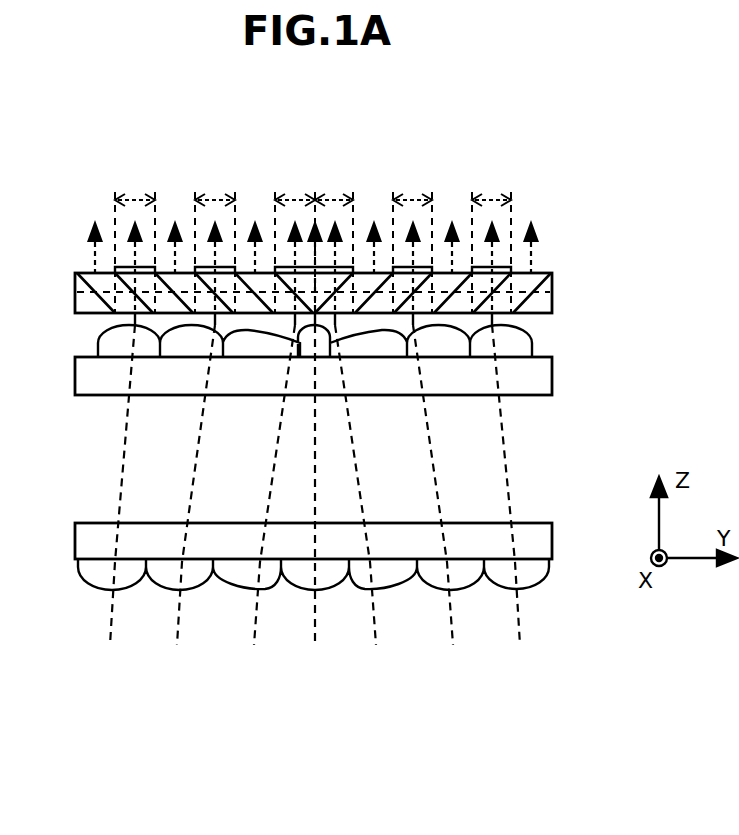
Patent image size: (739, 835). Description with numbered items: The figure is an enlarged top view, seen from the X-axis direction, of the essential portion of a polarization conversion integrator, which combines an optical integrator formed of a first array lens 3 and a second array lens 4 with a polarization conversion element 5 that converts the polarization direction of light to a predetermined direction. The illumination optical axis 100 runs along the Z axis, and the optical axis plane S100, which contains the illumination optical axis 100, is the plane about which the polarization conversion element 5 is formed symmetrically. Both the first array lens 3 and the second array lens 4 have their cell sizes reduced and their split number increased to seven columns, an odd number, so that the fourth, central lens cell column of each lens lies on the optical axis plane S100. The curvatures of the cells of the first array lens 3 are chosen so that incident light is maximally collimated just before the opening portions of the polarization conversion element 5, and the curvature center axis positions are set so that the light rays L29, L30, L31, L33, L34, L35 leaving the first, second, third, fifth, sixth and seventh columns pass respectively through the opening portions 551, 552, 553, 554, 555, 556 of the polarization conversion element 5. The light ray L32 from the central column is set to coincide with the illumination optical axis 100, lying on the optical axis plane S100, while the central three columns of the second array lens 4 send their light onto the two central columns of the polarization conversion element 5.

The illumination optical axis 100 is at (318, 622).
The optical axis plane S100 is at (425, 740).
The first array lens 3 is at (75, 537).
The second array lens 4 is at (88, 395).
The polarization conversion element 5 is at (542, 271).
The opening portion 551 is at (132, 192).
The opening portion 552 is at (213, 192).
The opening portion 553 is at (295, 192).
The opening portion 554 is at (337, 192).
The opening portion 555 is at (413, 192).
The opening portion 556 is at (490, 192).
The light ray L29 is at (108, 648).
The light ray L30 is at (177, 648).
The light ray L31 is at (254, 648).
The light ray L32 is at (313, 648).
The light ray L33 is at (378, 648).
The light ray L34 is at (455, 648).
The light ray L35 is at (522, 648).